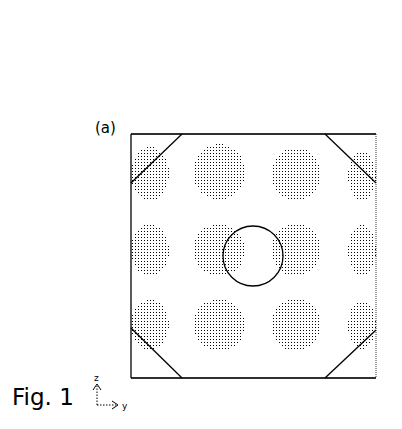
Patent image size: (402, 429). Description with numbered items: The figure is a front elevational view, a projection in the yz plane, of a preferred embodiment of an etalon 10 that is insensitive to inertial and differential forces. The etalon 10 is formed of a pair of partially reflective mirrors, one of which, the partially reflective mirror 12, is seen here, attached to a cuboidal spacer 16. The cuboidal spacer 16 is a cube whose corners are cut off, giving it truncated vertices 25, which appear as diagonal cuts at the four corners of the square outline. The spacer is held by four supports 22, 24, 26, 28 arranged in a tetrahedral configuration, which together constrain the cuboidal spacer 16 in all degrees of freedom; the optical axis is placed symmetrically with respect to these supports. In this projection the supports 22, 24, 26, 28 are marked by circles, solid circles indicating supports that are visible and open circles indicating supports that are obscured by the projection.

The etalon 10 is at (236, 106).
The partially reflective mirror 12 is at (255, 257).
The cuboidal spacer 16 is at (131, 252).
The support 22 is at (147, 146).
The support 24 is at (362, 358).
The truncated vertices 25 is at (173, 143).
The support 26 is at (362, 147).
The support 28 is at (146, 362).